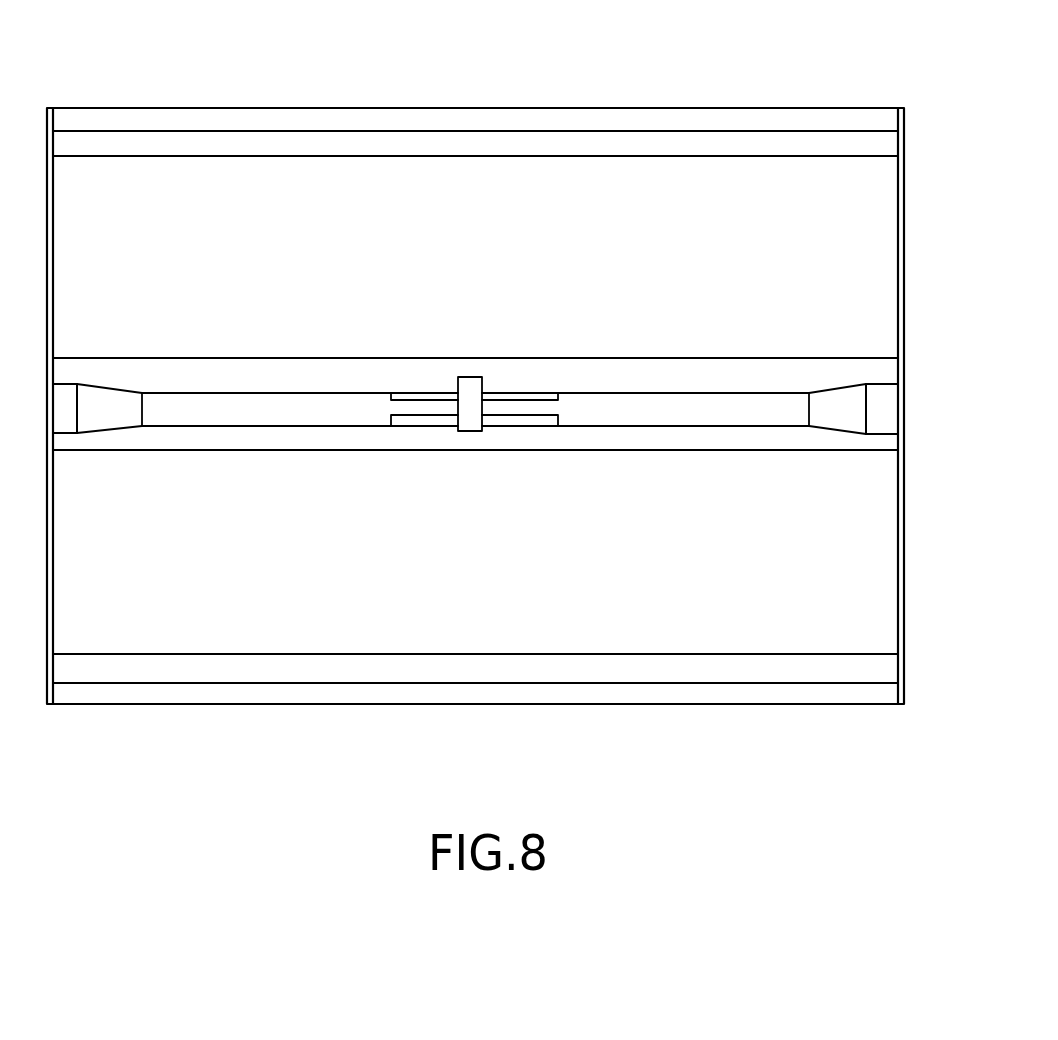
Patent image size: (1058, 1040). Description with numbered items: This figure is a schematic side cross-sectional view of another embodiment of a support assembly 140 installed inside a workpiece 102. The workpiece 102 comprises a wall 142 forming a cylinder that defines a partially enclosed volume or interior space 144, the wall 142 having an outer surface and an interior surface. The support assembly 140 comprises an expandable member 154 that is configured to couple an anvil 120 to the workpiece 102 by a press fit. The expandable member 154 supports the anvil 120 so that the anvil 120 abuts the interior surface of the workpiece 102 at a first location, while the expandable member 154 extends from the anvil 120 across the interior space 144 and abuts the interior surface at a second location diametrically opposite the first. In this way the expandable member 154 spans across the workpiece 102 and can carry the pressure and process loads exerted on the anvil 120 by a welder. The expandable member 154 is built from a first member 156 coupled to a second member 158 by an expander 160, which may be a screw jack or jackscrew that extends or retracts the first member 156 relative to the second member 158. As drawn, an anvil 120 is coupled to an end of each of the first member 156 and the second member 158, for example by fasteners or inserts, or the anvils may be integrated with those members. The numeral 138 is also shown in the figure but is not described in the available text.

The workpiece 102 is at (480, 109).
The interior space 144 is at (676, 101).
The wall 142 is at (53, 535).
The side wall of housing 138 is at (922, 407).
The support assembly 140 is at (544, 268).
The anvil 120 is at (72, 434).
The expandable member 154 is at (554, 352).
The first member 156 is at (289, 450).
The second member 158 is at (661, 447).
The expander 160 is at (455, 350).